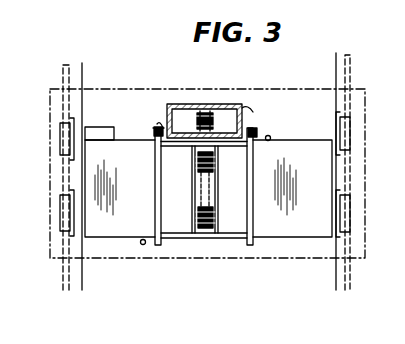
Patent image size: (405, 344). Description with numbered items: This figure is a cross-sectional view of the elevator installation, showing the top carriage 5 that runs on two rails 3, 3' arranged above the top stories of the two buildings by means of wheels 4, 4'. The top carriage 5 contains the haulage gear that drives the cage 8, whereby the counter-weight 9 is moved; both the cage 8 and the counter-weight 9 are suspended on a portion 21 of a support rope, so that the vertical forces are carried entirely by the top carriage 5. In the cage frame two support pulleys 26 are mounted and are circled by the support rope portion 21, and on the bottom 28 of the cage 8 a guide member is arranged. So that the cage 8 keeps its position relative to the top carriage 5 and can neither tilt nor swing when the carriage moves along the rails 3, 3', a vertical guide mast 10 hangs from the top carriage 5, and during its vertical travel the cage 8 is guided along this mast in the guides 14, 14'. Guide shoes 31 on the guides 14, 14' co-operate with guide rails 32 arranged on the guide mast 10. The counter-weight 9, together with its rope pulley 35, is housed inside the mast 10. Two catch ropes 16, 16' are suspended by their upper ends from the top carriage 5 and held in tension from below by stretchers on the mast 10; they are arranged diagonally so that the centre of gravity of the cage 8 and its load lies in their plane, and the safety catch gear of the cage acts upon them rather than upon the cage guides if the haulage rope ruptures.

The rail 3 is at (58, 175).
The rail 3' is at (361, 171).
The wheel 4 is at (48, 177).
The wheel 4' is at (360, 174).
The top carriage 5 is at (166, 88).
The cage 8 is at (316, 187).
The counter-weight 9 is at (243, 110).
The guide mast 10 is at (180, 105).
The guide 14 is at (142, 132).
The guide 14' is at (265, 126).
The catch rope 16 is at (138, 261).
The catch rope 16' is at (287, 128).
The support rope portion 21 is at (200, 186).
The support pulley 26 is at (212, 160).
The bottom of the cage 28 is at (140, 173).
The guide shoe 31 is at (156, 128).
The guide rail 32 is at (158, 126).
The rope pulley 35 is at (214, 120).